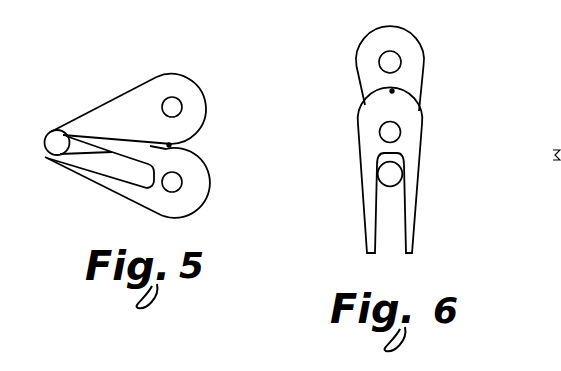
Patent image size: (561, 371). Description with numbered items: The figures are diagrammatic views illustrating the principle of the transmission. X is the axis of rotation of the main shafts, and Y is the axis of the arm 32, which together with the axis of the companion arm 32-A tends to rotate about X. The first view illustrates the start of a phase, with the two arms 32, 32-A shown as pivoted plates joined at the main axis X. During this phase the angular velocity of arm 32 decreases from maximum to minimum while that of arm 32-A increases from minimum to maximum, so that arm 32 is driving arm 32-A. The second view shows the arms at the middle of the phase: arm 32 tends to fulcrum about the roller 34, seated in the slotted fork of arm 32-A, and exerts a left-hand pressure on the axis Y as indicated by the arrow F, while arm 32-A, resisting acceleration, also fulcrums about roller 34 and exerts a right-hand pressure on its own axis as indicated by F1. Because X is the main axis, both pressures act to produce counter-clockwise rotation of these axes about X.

In FIG. 5, the arm 32 is at (197, 103).
In FIG. 6, the arm 32 is at (412, 67).
In FIG. 5, the arm 32-A is at (194, 188).
In FIG. 6, the arm 32-A is at (413, 162).
In FIG. 6, the roller 34 is at (395, 178).
In FIG. 5, the axis of arm 32 Y is at (174, 104).
In FIG. 6, the axis of arm 32 Y is at (392, 62).
In FIG. 5, the axis of rotation of the main shafts X is at (172, 146).
In FIG. 6, the axis of rotation of the main shafts X is at (395, 92).
In FIG. 6, the arrow indicating pressure on axis Y F is at (360, 62).
In FIG. 6, the pressure on axis Y-1 F1 is at (403, 132).